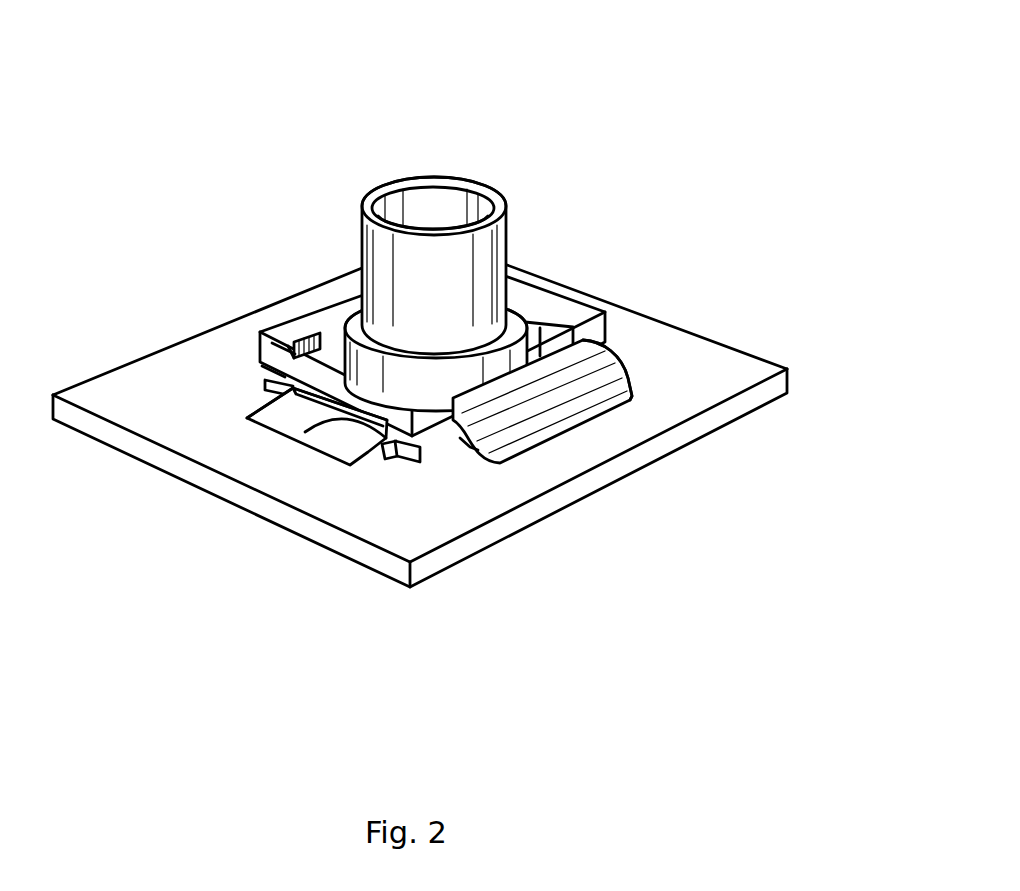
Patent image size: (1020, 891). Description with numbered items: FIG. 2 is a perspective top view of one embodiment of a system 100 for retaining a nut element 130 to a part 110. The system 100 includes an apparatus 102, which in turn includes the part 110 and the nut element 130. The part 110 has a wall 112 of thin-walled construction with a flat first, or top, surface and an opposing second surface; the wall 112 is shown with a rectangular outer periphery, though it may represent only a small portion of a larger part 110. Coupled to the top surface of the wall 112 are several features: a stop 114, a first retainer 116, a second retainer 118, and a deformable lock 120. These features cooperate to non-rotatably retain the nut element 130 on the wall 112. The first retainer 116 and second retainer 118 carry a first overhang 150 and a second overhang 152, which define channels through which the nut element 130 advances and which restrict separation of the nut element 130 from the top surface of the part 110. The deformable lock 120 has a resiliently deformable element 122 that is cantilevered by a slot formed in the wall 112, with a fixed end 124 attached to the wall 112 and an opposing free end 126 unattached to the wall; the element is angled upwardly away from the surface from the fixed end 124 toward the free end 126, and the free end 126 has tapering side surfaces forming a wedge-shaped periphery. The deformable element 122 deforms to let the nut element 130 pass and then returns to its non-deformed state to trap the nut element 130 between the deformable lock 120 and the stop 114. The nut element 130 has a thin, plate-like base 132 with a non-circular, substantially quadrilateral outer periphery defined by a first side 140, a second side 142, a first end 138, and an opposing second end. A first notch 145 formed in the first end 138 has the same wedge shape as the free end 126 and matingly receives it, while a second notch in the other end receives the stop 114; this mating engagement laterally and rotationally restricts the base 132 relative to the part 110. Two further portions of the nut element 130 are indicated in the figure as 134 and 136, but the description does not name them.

The system 100 is at (431, 346).
The apparatus 102 is at (483, 373).
The part 110 is at (396, 424).
The wall 112 is at (678, 338).
The stop 114 is at (378, 330).
The first retainer 116 is at (303, 316).
The second retainer 118 is at (644, 370).
The deformable lock 120 is at (253, 491).
The deformable element 122 is at (313, 428).
The fixed end 124 is at (268, 425).
The free end 126 is at (325, 467).
The nut element 130 is at (476, 244).
The base 132 is at (275, 366).
The base collar 134 is at (497, 247).
The tube 136 is at (484, 204).
The first end 138 is at (423, 450).
The first side 140 is at (264, 376).
The second side 142 is at (470, 447).
The first notch 145 is at (400, 457).
The first overhang 150 is at (285, 336).
The second overhang 152 is at (655, 472).